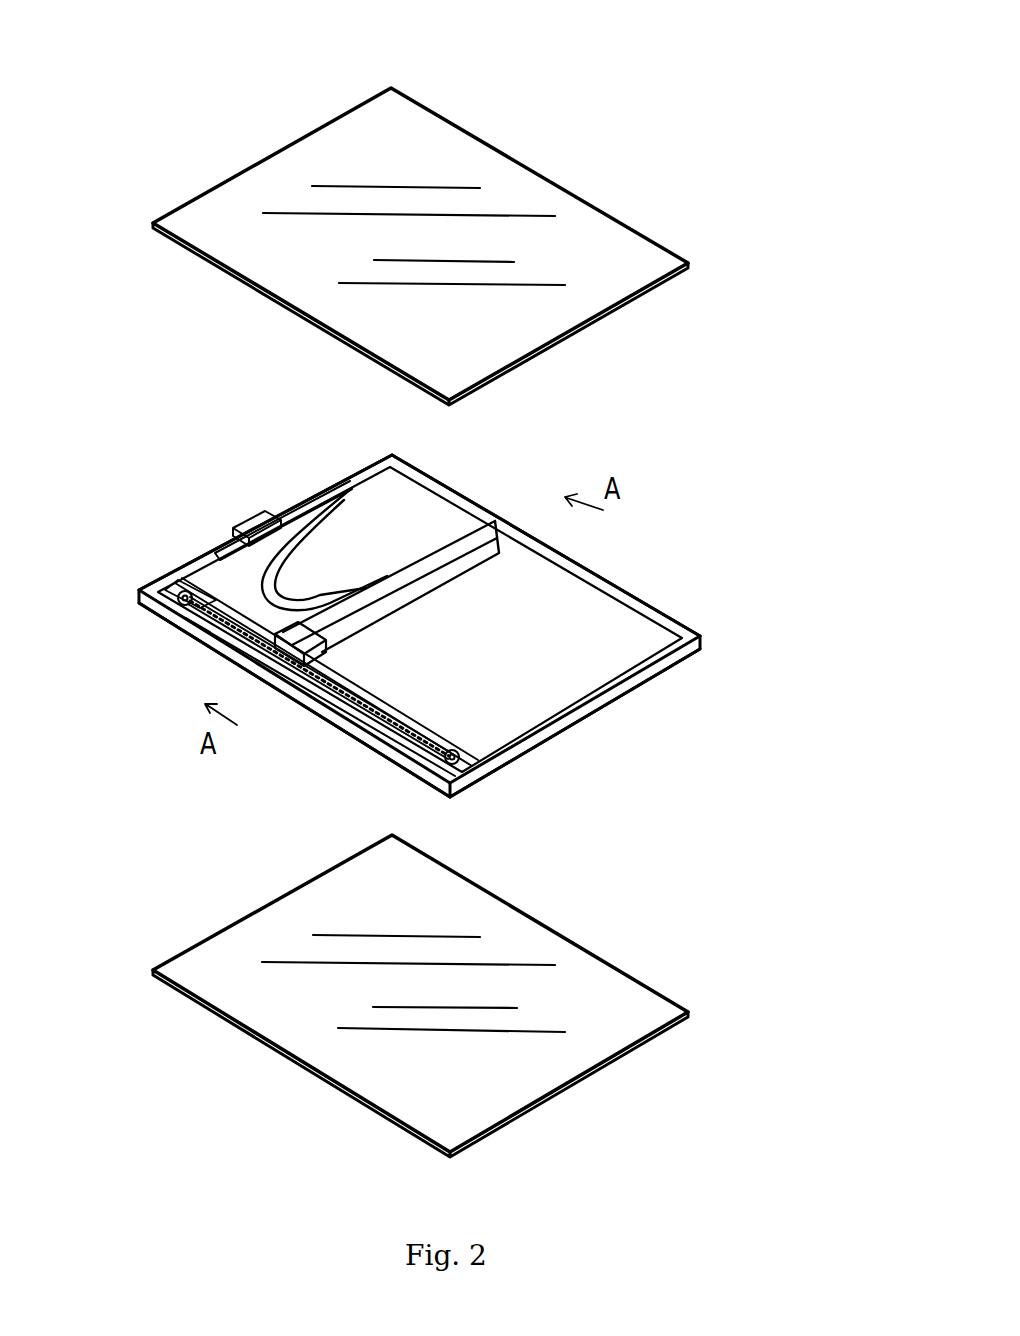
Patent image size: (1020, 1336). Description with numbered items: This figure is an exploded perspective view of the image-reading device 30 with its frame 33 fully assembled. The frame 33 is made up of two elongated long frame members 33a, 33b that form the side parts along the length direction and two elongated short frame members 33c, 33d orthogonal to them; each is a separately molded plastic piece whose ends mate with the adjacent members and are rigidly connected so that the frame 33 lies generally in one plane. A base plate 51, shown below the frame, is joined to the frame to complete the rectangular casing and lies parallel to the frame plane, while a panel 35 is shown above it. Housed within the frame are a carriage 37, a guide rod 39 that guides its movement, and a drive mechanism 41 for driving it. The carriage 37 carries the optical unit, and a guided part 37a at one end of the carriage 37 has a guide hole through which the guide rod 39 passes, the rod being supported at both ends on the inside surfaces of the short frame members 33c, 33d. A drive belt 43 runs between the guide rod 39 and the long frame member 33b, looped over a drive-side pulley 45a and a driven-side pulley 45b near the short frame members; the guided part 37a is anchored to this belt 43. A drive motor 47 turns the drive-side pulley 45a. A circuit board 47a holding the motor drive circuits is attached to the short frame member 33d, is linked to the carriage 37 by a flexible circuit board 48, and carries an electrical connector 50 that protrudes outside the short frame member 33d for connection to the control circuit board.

The image-reading device 30 is at (692, 477).
The frame 33 is at (428, 596).
The long frame member 33a is at (635, 597).
The long frame member 33b is at (327, 718).
The short frame member 33c is at (557, 730).
The short frame member 33d is at (350, 468).
The upper panel 35 is at (487, 157).
The carriage 37 is at (430, 553).
The guided part 37a is at (263, 677).
The guide rod 39 is at (423, 725).
The drive mechanism 41 is at (191, 633).
The drive belt 43 is at (385, 752).
The drive-side pulley 45a is at (182, 594).
The driven-side pulley 45b is at (460, 768).
The drive motor 47 is at (170, 590).
The circuit board 47a is at (237, 545).
The flexible circuit board 48 is at (306, 526).
The electrical connector 50 is at (262, 520).
The base plate 51 is at (643, 993).